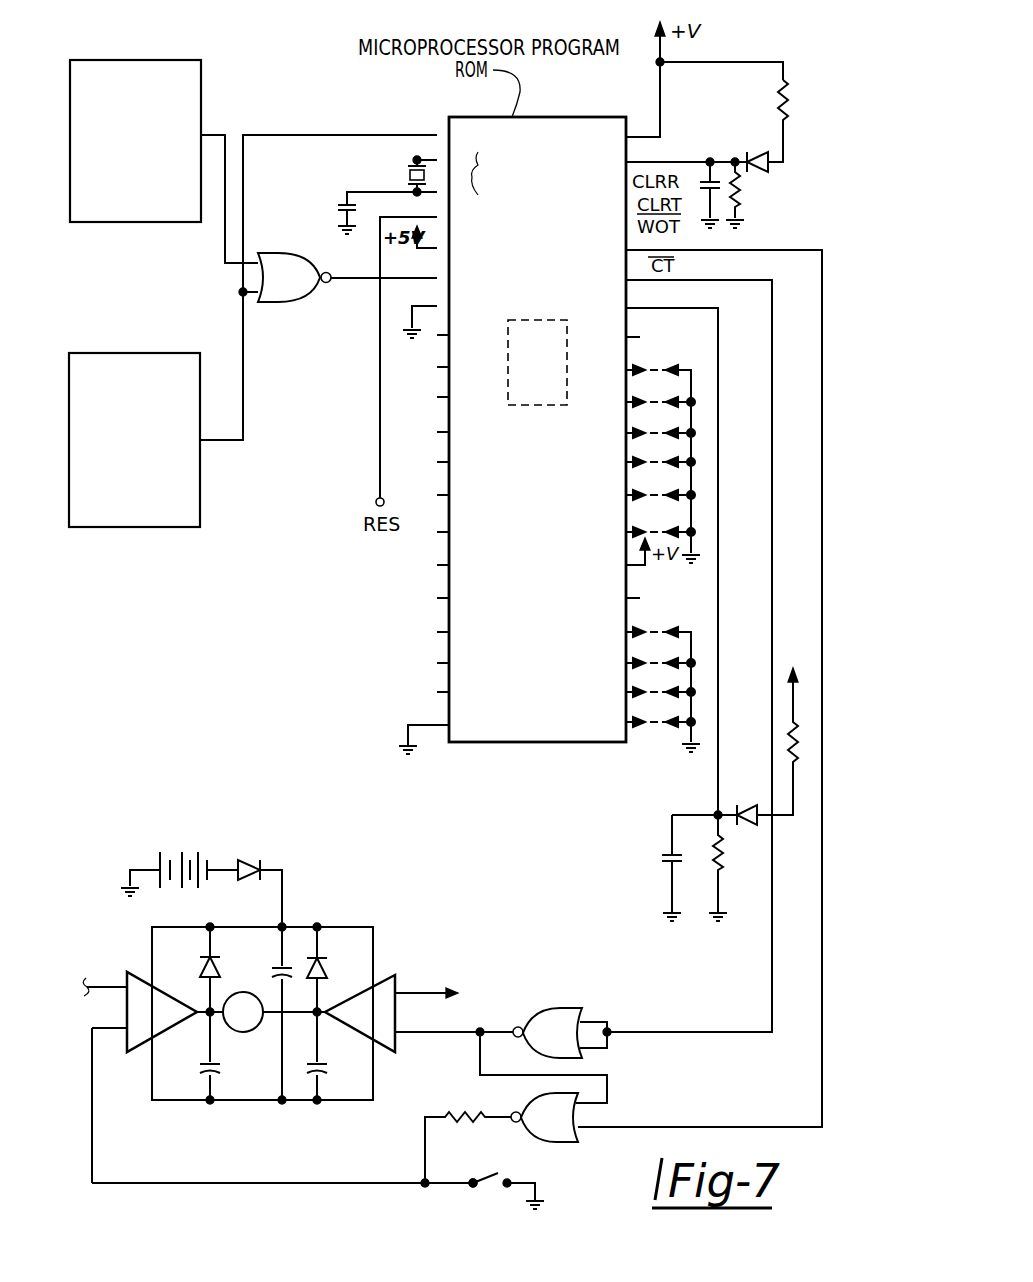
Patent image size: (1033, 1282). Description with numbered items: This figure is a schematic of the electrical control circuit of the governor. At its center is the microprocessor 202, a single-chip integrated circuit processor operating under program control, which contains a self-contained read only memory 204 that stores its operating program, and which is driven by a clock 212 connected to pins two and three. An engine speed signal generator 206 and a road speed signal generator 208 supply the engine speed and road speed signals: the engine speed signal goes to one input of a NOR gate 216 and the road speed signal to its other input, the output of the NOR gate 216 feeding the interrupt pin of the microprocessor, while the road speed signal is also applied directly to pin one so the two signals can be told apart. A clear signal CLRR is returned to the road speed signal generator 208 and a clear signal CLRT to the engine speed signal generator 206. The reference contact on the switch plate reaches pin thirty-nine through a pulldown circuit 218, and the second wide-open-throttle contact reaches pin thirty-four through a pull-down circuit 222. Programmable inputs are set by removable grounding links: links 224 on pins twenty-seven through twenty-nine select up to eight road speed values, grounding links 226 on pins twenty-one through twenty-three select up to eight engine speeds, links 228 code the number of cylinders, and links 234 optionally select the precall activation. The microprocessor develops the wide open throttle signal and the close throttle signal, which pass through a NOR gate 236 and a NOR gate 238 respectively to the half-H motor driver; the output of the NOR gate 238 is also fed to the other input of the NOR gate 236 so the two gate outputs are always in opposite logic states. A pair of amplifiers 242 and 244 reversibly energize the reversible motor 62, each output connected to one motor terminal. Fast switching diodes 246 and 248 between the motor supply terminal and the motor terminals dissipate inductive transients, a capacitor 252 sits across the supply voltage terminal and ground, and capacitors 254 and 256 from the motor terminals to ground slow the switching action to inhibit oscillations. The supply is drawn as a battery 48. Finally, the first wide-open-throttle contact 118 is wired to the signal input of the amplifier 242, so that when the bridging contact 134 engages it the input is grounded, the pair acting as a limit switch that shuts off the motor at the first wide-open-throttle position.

The engine speed signal generator 206 is at (157, 60).
The road speed signal generator 208 is at (122, 353).
The microprocessor 202 is at (573, 117).
The read only memory 204 is at (527, 407).
The clock 212 is at (400, 171).
The NOR gate 216 is at (318, 236).
The pulldown circuit 218 is at (751, 150).
The links 228 is at (662, 401).
The removable grounding links 224 is at (662, 461).
The links 234 is at (660, 640).
The grounding links 226 is at (660, 671).
The pull-down circuit 222 is at (745, 804).
The battery 48 is at (185, 852).
The amplifier 242 is at (160, 990).
The fast switching diode 246 is at (215, 957).
The reversible motor 62 is at (243, 992).
The capacitor 252 is at (287, 965).
The fast switching diode 248 is at (322, 957).
The amplifier 244 is at (390, 975).
The capacitor 254 is at (218, 1064).
The capacitor 256 is at (322, 1064).
The NOR gate 238 is at (575, 1008).
The NOR gate 236 is at (578, 1117).
The bridging contact 134 is at (495, 1175).
The wot-1 contact 118 is at (473, 1187).